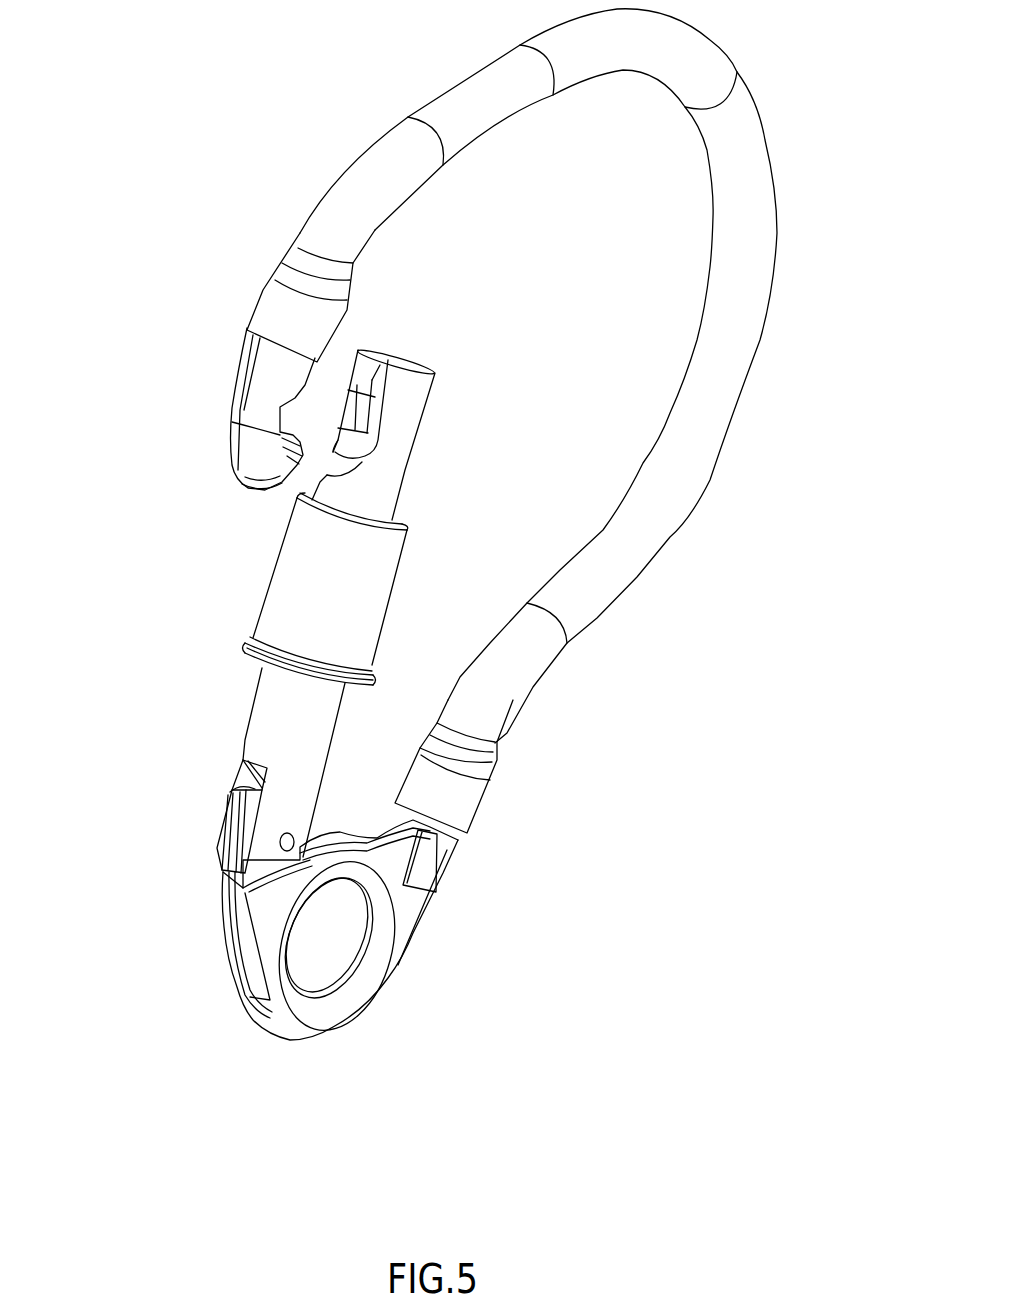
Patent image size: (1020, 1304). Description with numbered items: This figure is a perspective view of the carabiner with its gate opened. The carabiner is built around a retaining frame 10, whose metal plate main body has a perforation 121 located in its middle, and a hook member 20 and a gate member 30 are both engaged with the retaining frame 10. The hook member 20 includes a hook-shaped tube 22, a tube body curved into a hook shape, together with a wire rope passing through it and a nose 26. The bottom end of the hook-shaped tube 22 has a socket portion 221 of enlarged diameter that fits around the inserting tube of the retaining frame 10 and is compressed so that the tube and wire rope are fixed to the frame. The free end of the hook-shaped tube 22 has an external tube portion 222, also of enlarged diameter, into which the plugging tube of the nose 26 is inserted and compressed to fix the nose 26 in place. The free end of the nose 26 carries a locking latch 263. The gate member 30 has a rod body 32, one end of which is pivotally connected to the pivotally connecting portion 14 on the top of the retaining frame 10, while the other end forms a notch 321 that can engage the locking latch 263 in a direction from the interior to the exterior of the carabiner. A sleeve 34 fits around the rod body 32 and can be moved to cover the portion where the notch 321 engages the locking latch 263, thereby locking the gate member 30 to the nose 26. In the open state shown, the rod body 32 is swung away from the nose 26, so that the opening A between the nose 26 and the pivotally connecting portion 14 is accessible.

The retaining frame 10 is at (310, 936).
The perforation 121 is at (317, 967).
The pivotally connecting portion 14 is at (235, 808).
The hook member 20 is at (444, 421).
The hook-shaped tube 22 is at (677, 482).
The socket portion 221 is at (487, 790).
The external tube portion 222 is at (265, 292).
The nose 26 is at (201, 433).
The locking latch 263 is at (277, 483).
The gate member 30 is at (417, 546).
The rod body 32 is at (419, 378).
The notch 321 is at (385, 352).
The sleeve 34 is at (385, 567).
The opening A is at (260, 545).